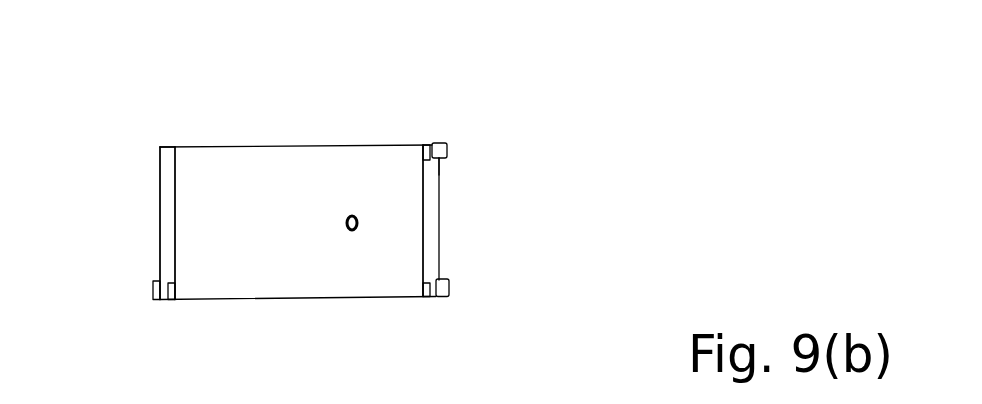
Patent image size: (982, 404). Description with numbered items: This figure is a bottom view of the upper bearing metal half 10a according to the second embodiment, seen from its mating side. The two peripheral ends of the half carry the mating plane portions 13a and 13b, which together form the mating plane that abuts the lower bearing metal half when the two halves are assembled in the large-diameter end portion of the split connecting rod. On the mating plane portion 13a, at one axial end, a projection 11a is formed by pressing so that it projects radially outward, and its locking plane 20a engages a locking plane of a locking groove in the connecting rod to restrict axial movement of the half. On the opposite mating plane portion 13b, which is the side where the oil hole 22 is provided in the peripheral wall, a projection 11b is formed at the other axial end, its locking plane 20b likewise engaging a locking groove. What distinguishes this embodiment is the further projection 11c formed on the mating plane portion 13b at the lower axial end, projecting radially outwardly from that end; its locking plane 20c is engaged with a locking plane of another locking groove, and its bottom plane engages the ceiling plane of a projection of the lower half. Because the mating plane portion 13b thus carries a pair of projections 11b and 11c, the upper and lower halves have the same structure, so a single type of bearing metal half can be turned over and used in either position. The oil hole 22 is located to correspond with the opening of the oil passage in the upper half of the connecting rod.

The upper bearing metal half 10a is at (312, 113).
The mating plane portion 13a is at (166, 177).
The mating plane portion 13b is at (428, 228).
The locking plane 20a is at (158, 281).
The locking plane 20b is at (440, 160).
The locking plane 20c is at (446, 279).
The projection 11a is at (153, 293).
The projection 11b is at (447, 146).
The projection 11c is at (448, 297).
The oil hole 22 is at (345, 224).